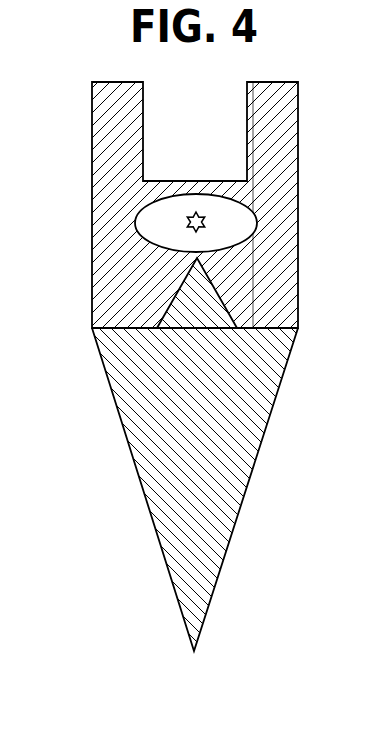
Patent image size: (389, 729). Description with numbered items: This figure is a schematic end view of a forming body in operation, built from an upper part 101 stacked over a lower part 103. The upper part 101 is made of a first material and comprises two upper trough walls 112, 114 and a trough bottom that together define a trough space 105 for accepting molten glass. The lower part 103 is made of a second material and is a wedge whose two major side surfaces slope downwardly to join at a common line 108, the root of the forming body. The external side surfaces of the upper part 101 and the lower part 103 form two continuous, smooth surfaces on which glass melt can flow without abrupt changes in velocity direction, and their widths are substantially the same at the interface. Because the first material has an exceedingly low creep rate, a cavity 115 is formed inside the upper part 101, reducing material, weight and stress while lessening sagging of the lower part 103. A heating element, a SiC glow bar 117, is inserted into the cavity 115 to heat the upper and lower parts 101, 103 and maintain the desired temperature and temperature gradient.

The upper part 101 is at (285, 263).
The lower part 103 is at (265, 395).
The trough space 105 is at (177, 133).
The common line 108 is at (194, 651).
The upper trough wall 112 is at (92, 125).
The upper trough wall 114 is at (291, 120).
The cavity 115 is at (182, 233).
The SiC glow bar 117 is at (205, 218).